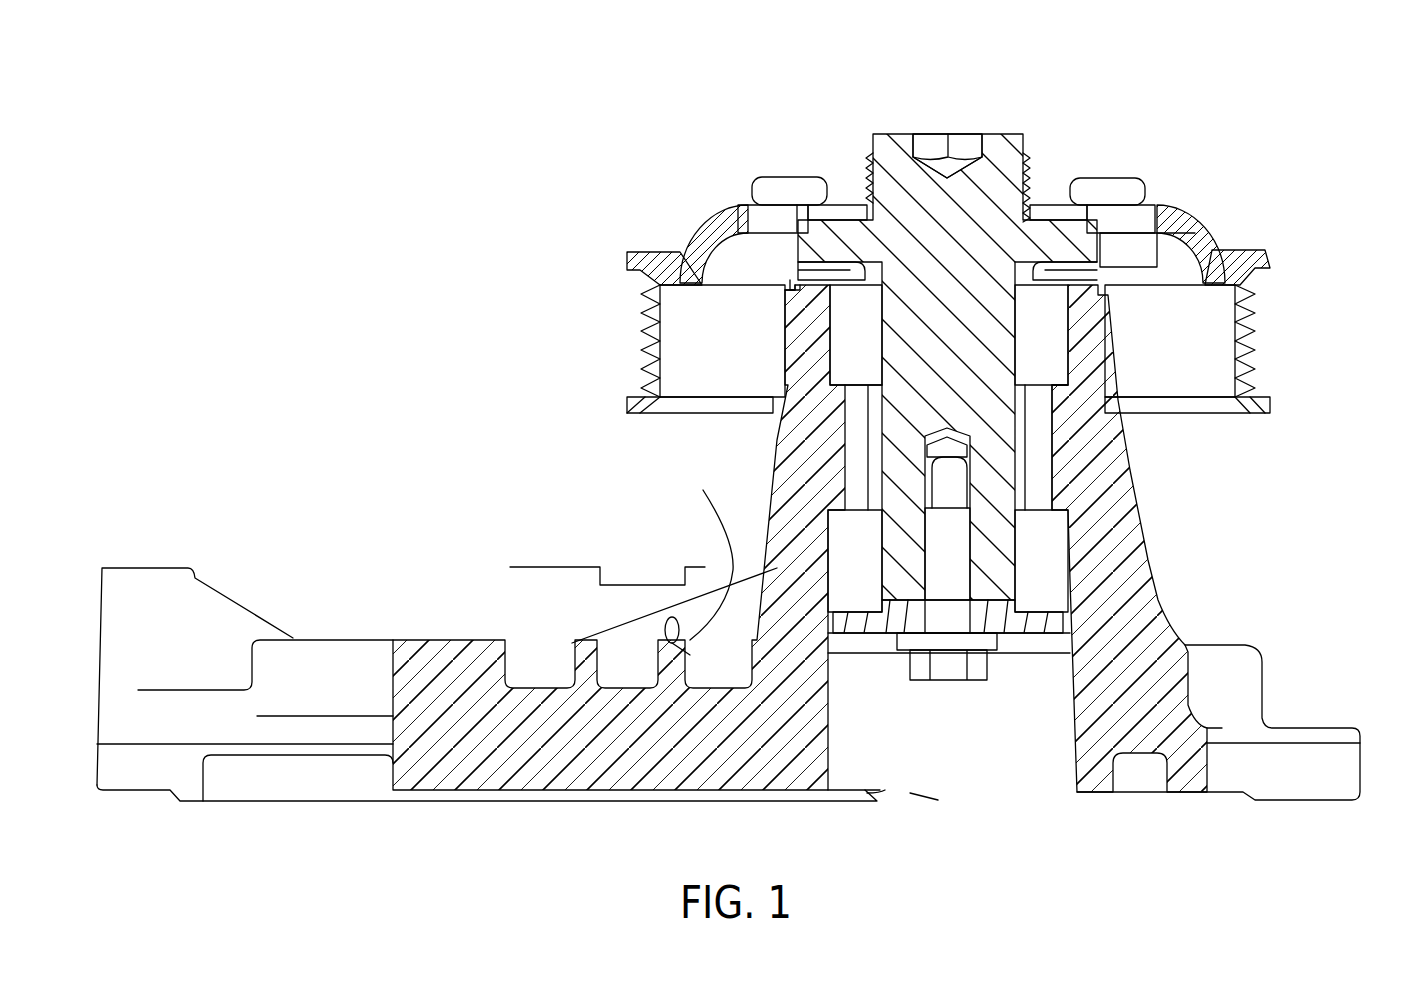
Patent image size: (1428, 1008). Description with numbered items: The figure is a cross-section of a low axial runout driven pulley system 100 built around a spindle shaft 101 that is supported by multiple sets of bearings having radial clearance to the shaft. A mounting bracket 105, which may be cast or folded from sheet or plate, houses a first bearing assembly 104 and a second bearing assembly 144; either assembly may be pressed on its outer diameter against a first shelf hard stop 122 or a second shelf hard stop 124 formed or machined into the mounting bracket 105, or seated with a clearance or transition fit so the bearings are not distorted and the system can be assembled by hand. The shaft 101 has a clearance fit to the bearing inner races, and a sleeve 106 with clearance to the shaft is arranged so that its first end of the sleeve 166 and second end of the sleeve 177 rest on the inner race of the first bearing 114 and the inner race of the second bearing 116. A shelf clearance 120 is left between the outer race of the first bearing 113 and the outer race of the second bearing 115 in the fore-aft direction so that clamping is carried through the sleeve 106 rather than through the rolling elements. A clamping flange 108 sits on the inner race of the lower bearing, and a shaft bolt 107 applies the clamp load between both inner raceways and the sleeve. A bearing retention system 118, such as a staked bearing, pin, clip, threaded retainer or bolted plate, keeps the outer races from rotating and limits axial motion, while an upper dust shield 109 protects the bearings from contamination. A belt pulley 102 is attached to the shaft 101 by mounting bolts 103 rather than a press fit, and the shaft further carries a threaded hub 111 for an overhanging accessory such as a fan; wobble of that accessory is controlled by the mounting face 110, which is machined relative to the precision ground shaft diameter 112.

The low axial runout driven pulley system 100 is at (432, 163).
The shaft 101 is at (1065, 228).
The belt pulley 102 is at (636, 298).
The mounting bolts 103 is at (1112, 176).
The first bearing assembly 104 is at (836, 320).
The mounting bracket 105 is at (768, 613).
The sleeve 106 is at (1034, 470).
The shaft bolt 107 is at (1052, 520).
The clamping flange 108 is at (1023, 640).
The upper dust shield 109 is at (778, 266).
The mounting face 110 is at (1213, 243).
The threaded hub 111 is at (1022, 186).
The shaft diameter 112 is at (1034, 434).
The outer race of the first bearing 113 is at (818, 373).
The inner race of the first bearing 114 is at (876, 357).
The outer race of the second bearing 115 is at (815, 593).
The inner race of the second bearing 116 is at (870, 572).
The bearing retention system 118 is at (806, 281).
The shelf clearance 120 is at (1084, 506).
The first shelf hard stop 122 is at (1036, 386).
The second shelf hard stop 124 is at (1067, 506).
The second bearing assembly 144 is at (855, 527).
The first end of the sleeve 166 is at (1078, 384).
The second end of the sleeve 177 is at (1048, 515).